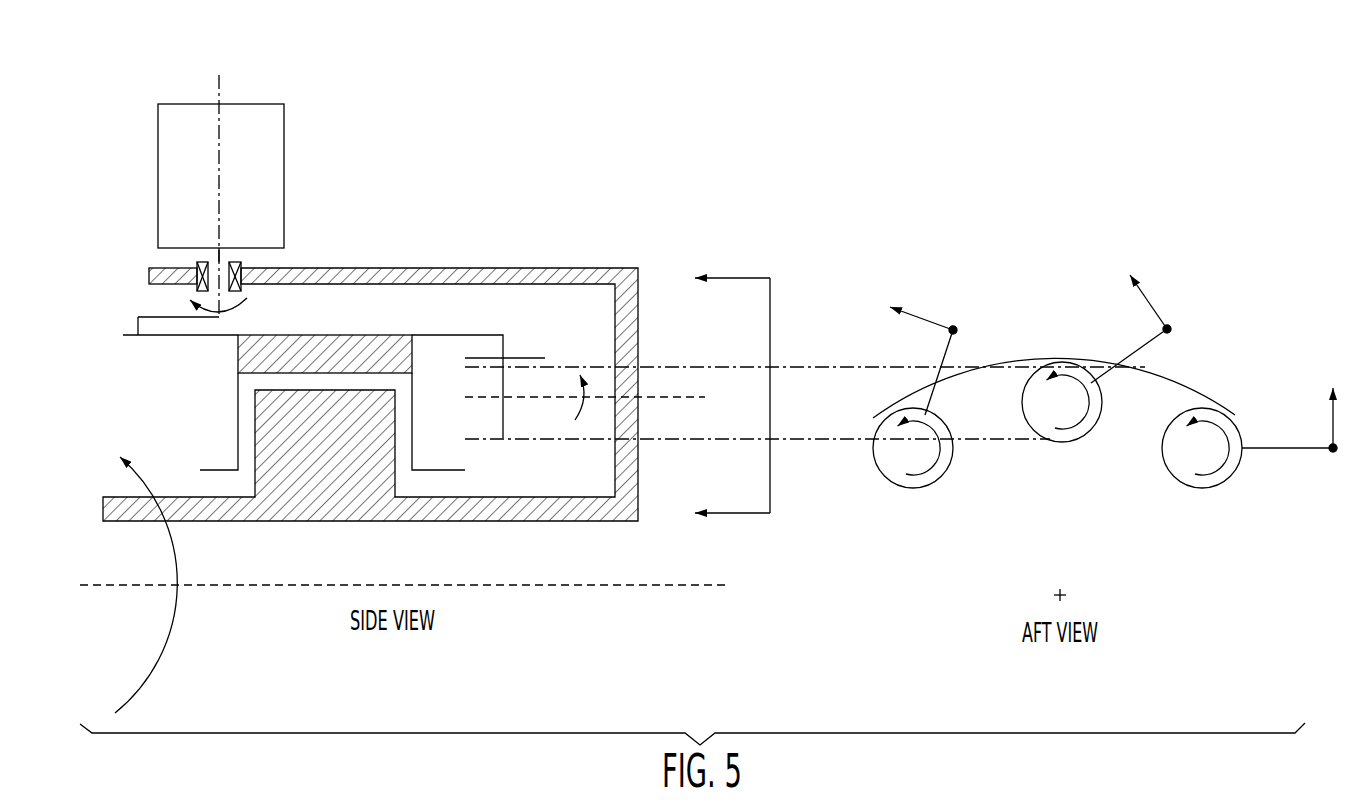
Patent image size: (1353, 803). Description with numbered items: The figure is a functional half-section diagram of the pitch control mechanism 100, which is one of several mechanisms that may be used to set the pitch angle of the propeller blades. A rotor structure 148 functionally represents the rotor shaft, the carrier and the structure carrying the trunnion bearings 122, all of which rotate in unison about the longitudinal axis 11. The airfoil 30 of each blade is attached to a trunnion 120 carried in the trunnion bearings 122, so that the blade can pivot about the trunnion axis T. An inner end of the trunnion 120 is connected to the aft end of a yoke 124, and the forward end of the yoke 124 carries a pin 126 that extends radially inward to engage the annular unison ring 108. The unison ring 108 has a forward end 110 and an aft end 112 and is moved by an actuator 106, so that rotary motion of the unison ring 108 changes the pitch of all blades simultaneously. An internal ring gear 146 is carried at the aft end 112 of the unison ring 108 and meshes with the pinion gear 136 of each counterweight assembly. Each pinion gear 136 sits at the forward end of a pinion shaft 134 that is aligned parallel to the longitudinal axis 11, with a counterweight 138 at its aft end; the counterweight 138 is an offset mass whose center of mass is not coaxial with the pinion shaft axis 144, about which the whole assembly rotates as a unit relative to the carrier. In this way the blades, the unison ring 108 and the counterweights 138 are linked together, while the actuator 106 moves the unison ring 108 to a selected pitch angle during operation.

The longitudinal axis 11 is at (608, 585).
The airfoil 30 is at (190, 137).
The pitch control mechanism 100 is at (640, 175).
The actuator 106 is at (232, 358).
The unison ring 108 is at (323, 335).
The forward end 110 is at (199, 337).
The aft end 112 is at (466, 334).
The trunnion 120 is at (224, 254).
The trunnion bearings 122 is at (242, 290).
The yoke 124 is at (168, 317).
The pin 126 is at (138, 343).
The pinion shaft 134 is at (547, 397).
The pinion gear 136 is at (488, 441).
The counterweight 138 is at (953, 330).
The pinion shaft axis 144 is at (663, 397).
The internal ring gear 146 is at (530, 358).
The rotor structure 148 is at (193, 521).
The trunnion axis T is at (219, 92).